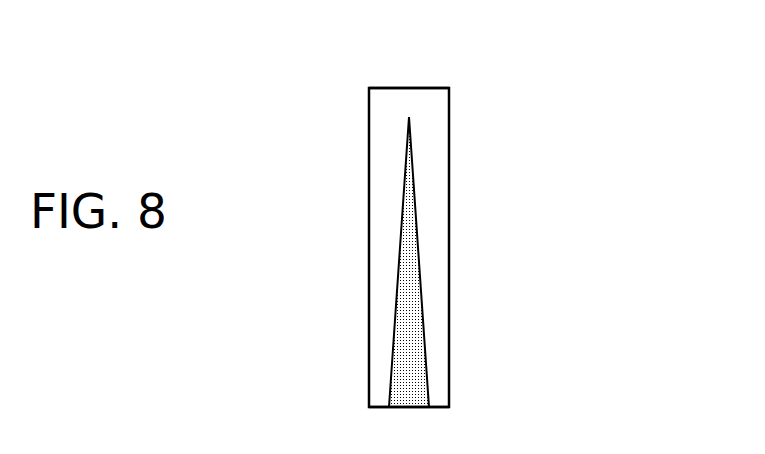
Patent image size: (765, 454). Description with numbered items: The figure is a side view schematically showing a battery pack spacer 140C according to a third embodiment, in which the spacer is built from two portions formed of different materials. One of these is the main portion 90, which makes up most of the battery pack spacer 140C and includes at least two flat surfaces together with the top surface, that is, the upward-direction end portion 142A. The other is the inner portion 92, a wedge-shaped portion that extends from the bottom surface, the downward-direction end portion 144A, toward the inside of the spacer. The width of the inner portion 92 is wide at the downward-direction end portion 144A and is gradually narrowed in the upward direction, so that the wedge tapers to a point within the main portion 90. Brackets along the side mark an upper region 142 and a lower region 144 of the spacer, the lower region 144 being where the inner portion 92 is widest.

The battery pack spacer 140C is at (688, 46).
The main portion 90 is at (433, 168).
The inner portion 92 is at (413, 340).
The upper portion 142 is at (342, 89).
The lower portion 144 is at (344, 317).
The upward-direction end portion 142A is at (410, 87).
The downward-direction end portion 144A is at (437, 407).